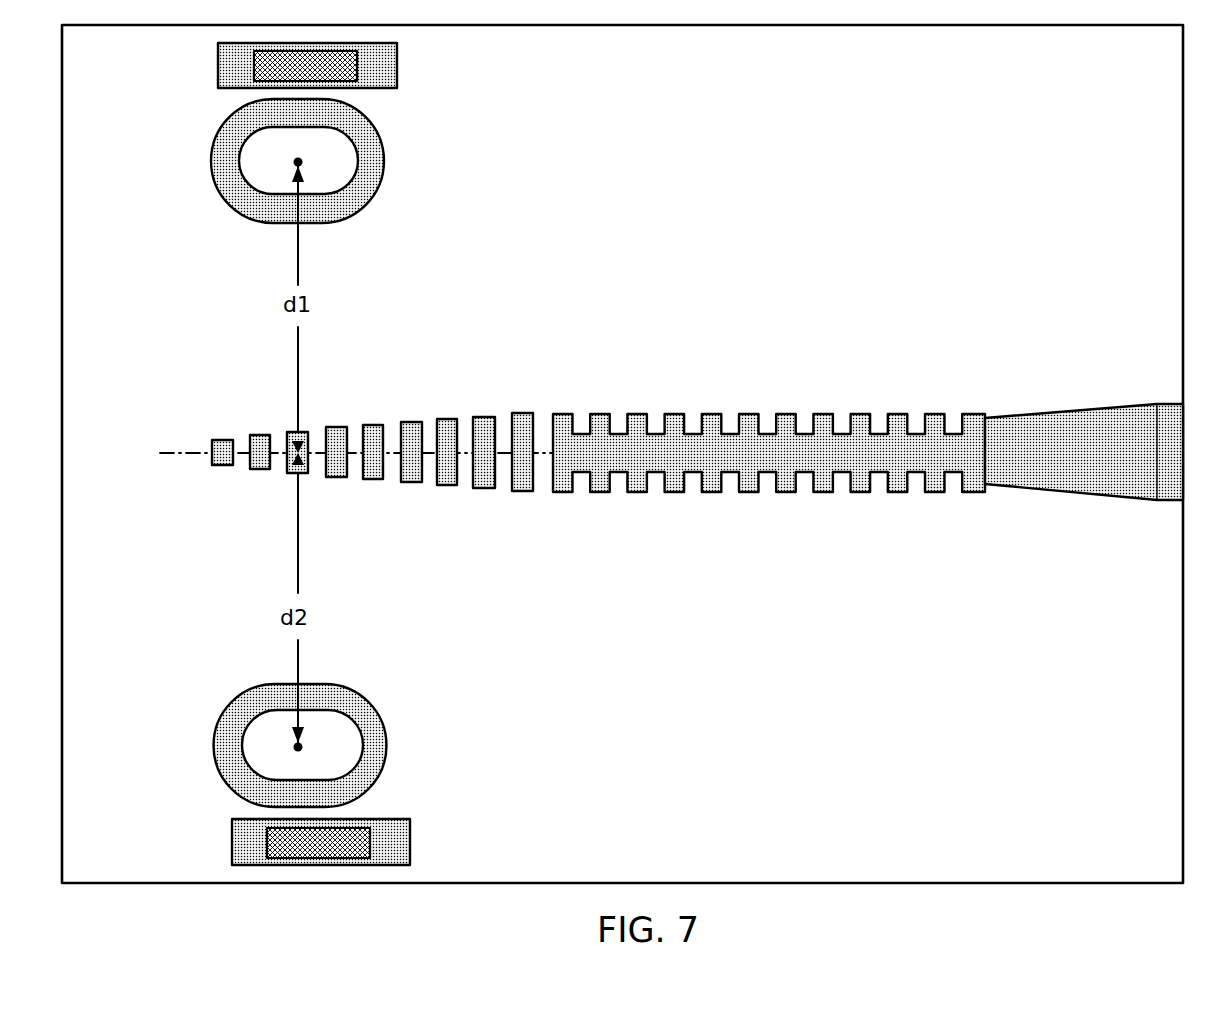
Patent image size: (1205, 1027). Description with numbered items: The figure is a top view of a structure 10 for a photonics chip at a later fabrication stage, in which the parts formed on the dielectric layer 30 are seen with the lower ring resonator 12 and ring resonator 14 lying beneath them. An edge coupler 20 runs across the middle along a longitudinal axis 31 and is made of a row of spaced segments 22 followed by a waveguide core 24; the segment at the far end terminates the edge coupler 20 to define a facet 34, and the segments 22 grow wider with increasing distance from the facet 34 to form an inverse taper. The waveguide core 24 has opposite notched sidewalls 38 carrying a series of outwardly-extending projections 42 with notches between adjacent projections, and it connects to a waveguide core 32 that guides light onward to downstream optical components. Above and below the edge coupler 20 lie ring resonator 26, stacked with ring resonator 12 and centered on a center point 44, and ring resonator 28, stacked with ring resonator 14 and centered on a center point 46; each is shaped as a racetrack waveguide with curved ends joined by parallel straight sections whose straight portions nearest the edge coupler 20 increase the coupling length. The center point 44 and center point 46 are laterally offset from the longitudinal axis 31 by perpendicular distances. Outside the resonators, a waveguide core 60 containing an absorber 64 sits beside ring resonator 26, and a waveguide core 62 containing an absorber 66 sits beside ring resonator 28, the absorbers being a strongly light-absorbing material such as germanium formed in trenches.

The structure 10 is at (92, 94).
The ring resonator 12 is at (258, 467).
The ring resonator 14 is at (758, 460).
The edge coupler 20 is at (665, 413).
The segments 22 is at (410, 438).
The waveguide core 24 is at (730, 450).
The ring resonator 26 is at (363, 147).
The ring resonator 28 is at (370, 745).
The dielectric layer 30 is at (1131, 816).
The longitudinal axis 31 is at (193, 450).
The waveguide core 32 is at (1095, 440).
The facet 34 is at (214, 461).
The notched sidewalls 38 is at (765, 432).
The projections 42 is at (600, 418).
The center point 44 is at (294, 161).
The center point 46 is at (294, 746).
The waveguide core 60 is at (323, 65).
The waveguide core 62 is at (335, 842).
The absorber 64 is at (280, 70).
The absorber 66 is at (293, 845).